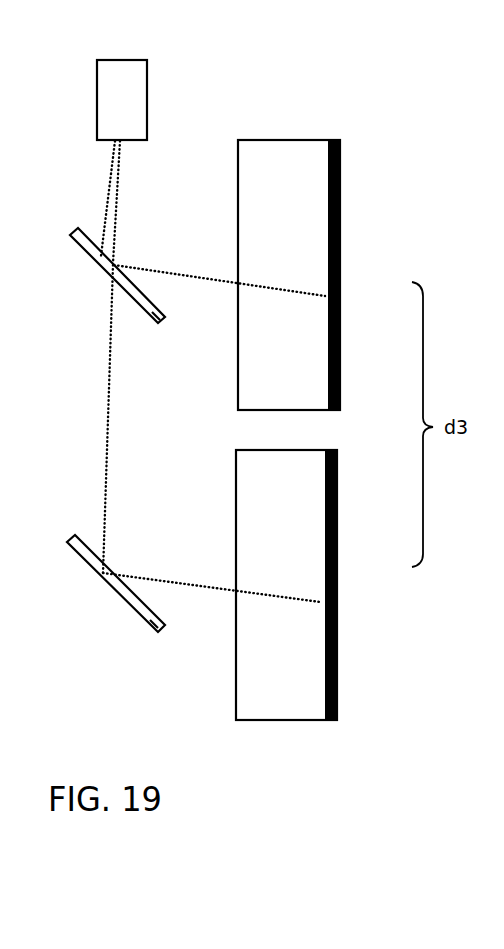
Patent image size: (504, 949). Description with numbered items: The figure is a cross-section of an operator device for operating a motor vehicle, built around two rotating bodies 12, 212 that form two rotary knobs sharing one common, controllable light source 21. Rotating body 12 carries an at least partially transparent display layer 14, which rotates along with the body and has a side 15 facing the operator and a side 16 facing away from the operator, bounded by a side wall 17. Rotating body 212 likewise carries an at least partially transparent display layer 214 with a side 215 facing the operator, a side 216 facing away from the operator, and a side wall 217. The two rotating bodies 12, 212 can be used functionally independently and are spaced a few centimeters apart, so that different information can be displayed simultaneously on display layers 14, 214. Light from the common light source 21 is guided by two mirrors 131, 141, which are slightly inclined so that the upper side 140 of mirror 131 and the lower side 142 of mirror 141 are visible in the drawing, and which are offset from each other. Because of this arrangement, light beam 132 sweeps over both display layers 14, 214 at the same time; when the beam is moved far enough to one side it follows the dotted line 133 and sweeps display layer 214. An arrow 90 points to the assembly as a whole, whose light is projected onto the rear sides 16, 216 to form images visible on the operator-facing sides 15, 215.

The controllable light source 21 is at (121, 69).
The light beam 132 is at (103, 232).
The dotted line 133 is at (98, 540).
The mirror 131 is at (80, 242).
The upper side of mirror 131 140 is at (158, 318).
The mirror 141 is at (76, 552).
The lower side of mirror 141 142 is at (154, 624).
The rotating body 12 is at (314, 228).
The side wall of the rotating body 17 is at (263, 140).
The display layer 14 is at (333, 233).
The side facing an operator 15 is at (340, 318).
The side facing away from the operator 16 is at (326, 400).
The rotating body 212 is at (289, 600).
The side wall 217 is at (260, 450).
The display layer 214 is at (330, 543).
The side facing an operator 215 is at (337, 627).
The side facing away from the operator 216 is at (320, 708).
The processing apparatus 90 is at (362, 125).